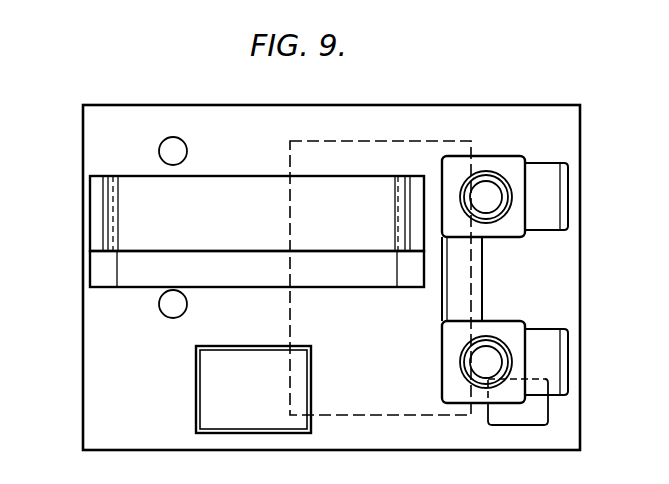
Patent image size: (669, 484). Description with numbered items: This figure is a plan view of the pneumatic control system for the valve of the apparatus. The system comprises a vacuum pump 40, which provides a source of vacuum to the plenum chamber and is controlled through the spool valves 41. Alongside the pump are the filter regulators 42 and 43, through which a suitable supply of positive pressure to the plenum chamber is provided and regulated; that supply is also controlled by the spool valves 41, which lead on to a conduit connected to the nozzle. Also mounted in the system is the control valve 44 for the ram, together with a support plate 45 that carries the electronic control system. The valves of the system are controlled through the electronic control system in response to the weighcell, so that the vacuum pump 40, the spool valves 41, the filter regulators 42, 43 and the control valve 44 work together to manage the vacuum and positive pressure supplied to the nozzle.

The vacuum pump 40 is at (137, 266).
The spool valves 41 is at (137, 192).
The filter regulator 42 is at (495, 199).
The filter regulator 43 is at (495, 365).
The control valve 44 is at (213, 385).
The support plate 45 is at (393, 145).